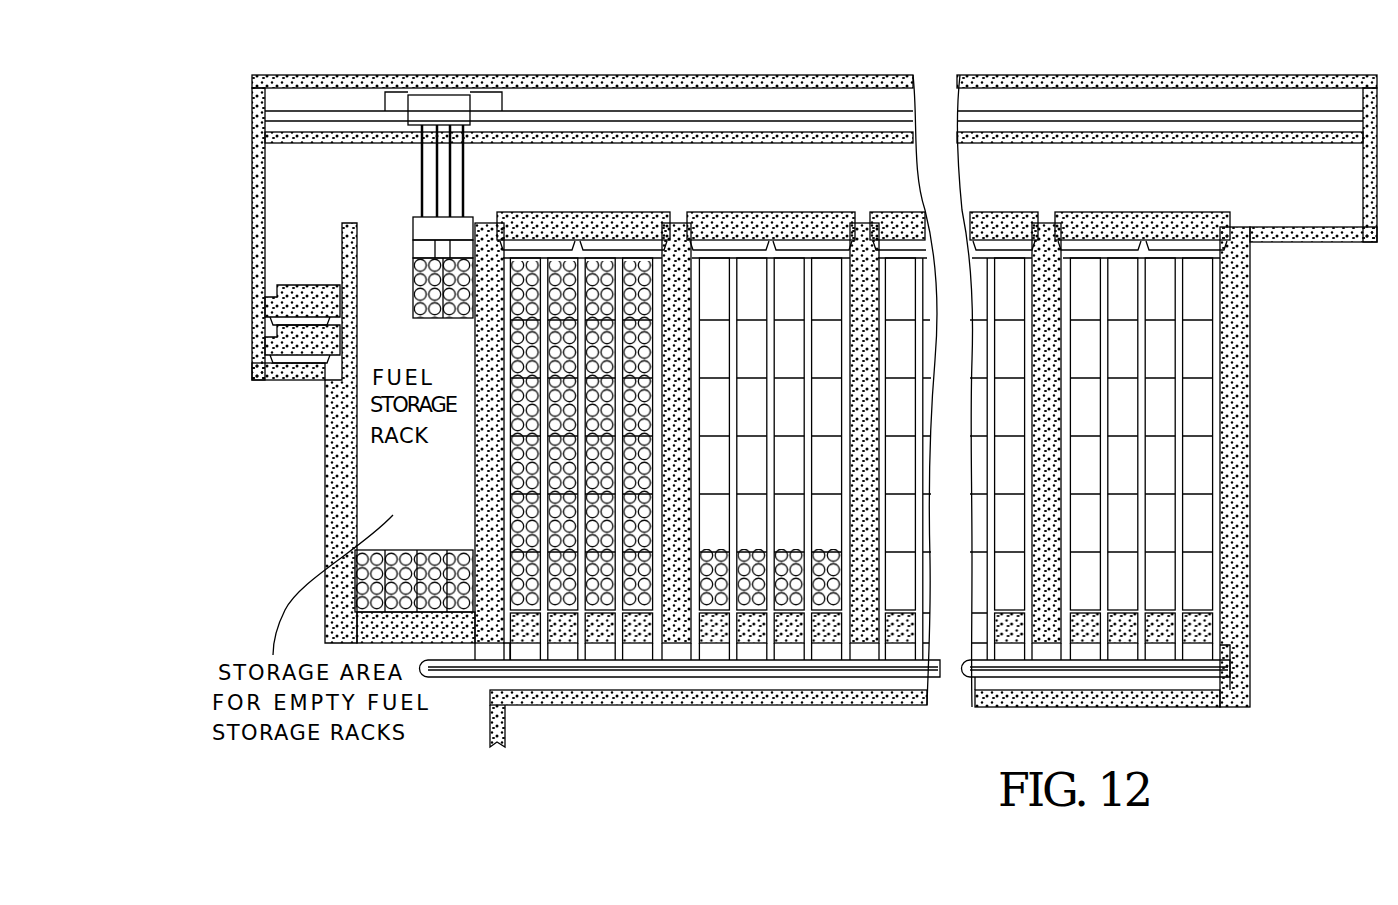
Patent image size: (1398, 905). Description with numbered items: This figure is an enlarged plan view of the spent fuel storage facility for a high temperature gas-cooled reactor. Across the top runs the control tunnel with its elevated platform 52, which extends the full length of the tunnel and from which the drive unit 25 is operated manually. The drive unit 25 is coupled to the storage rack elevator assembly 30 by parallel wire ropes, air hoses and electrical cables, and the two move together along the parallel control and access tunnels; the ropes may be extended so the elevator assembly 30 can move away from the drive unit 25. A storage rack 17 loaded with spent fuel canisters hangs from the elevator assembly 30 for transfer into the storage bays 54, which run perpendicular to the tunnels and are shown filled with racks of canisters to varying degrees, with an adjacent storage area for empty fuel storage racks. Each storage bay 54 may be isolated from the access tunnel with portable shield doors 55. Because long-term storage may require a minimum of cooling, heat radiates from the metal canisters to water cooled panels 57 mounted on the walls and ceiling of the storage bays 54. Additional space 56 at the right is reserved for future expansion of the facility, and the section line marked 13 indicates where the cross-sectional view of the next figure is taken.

The elevated platform 52 is at (512, 50).
The storage rack elevator assembly 30 is at (473, 218).
The drive unit 25 is at (412, 110).
The storage rack 17 is at (453, 317).
The storage bays 54 is at (603, 588).
The water cooled panels 57 is at (642, 273).
The portable shield doors 55 is at (1172, 212).
The additional space 56 is at (1350, 488).
The section line for FIG. 13 is at (1090, 75).